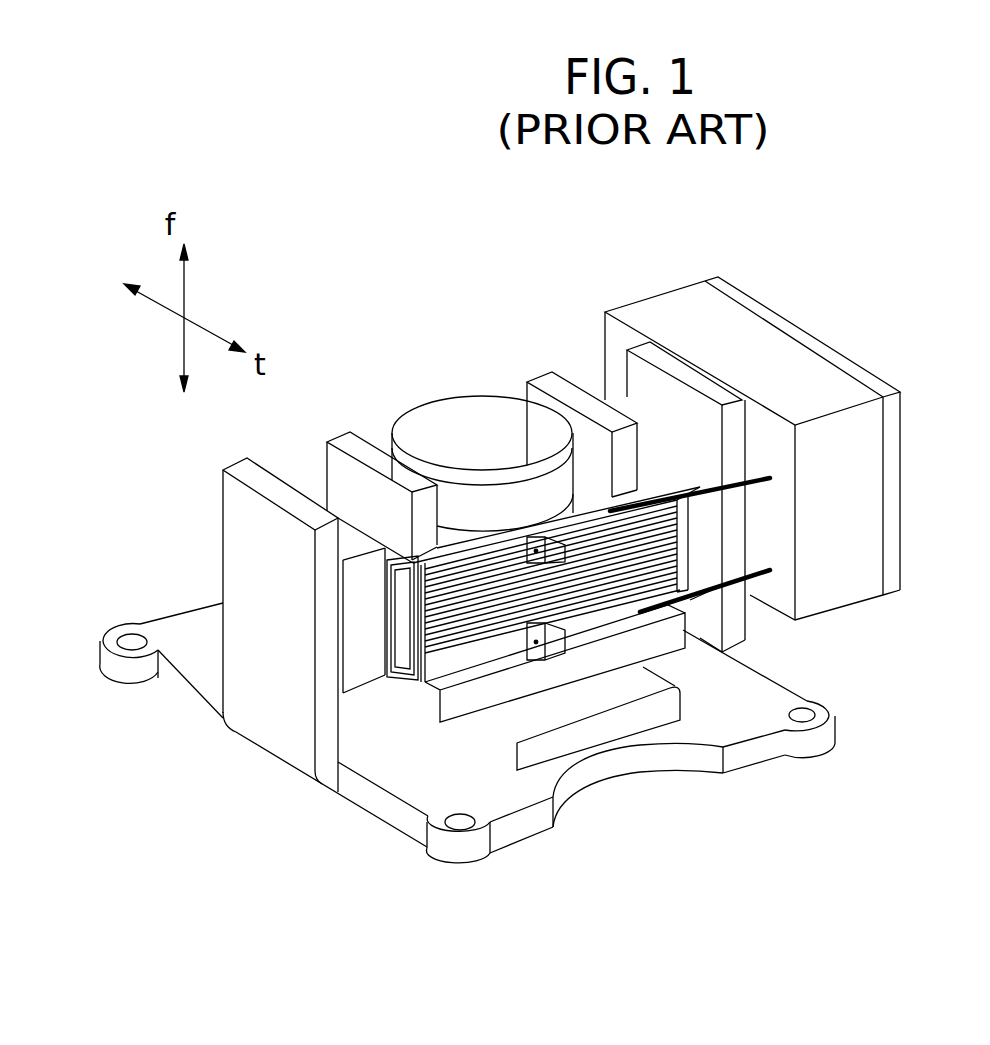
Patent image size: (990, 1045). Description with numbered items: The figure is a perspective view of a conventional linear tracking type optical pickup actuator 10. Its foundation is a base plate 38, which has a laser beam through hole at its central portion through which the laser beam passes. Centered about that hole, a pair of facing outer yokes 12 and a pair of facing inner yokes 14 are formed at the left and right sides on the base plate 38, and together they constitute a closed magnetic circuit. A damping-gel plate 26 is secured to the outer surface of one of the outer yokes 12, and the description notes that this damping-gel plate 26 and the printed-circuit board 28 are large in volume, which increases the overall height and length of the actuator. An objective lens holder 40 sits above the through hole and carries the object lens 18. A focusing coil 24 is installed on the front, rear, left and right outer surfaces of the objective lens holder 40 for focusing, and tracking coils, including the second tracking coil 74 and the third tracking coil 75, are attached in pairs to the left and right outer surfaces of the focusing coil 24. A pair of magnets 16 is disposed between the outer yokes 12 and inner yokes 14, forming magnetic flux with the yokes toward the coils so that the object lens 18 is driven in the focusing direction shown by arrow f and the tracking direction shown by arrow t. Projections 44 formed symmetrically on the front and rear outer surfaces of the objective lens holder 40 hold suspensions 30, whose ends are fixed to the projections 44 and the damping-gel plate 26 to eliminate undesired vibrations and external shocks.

The optical pickup actuator 10 is at (465, 197).
The outer yokes 12 is at (250, 550).
The inner yokes 14 is at (358, 447).
The magnets 16 is at (320, 473).
The object lens 18 is at (453, 413).
The focusing coil 24 is at (510, 607).
The damping-gel plate 26 is at (837, 595).
The printed-circuit board 28 is at (833, 357).
The suspensions 30 is at (710, 590).
The base plate 38 is at (370, 812).
The objective lens holder 40 is at (597, 493).
The projections 44 is at (565, 558).
The second tracking coil 74 is at (382, 765).
The third tracking coil 75 is at (590, 517).